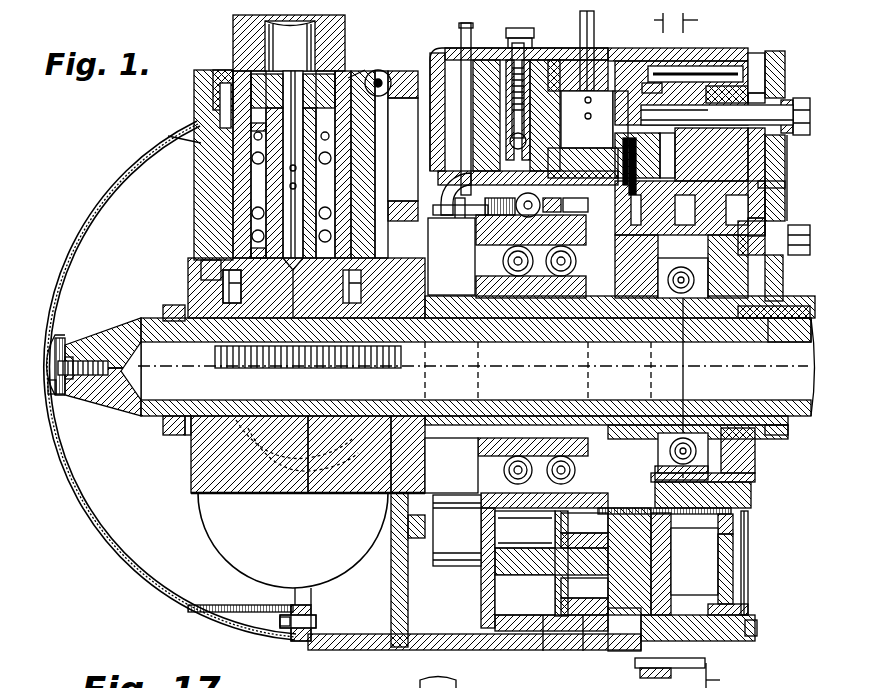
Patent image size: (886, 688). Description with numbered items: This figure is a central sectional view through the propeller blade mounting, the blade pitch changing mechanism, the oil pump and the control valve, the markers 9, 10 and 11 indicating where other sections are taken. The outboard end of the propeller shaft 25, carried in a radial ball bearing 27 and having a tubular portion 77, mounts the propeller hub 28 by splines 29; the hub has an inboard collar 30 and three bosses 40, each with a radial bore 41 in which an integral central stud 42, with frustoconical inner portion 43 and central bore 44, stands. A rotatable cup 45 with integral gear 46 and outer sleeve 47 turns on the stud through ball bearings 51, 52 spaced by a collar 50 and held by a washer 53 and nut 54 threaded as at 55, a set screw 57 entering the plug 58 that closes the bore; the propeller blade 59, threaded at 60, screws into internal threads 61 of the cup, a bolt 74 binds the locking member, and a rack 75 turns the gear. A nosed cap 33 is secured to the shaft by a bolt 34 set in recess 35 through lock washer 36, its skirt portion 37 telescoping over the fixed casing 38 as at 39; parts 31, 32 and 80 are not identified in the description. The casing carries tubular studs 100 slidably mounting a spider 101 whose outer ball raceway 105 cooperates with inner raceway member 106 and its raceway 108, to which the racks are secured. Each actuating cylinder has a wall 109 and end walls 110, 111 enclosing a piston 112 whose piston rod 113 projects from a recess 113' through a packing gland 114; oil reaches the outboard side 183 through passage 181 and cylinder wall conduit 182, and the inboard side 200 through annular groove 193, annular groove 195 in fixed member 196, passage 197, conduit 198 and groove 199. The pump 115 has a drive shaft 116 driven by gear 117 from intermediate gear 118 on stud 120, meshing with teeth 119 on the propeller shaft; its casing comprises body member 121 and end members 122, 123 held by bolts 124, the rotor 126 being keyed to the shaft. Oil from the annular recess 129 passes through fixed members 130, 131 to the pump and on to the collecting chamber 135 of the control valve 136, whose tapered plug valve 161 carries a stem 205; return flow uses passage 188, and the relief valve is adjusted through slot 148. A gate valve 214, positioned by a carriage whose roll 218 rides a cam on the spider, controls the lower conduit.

The section line 9 is at (709, 350).
The section line 10 is at (745, 45).
The section line 11 is at (649, 23).
The propeller shaft 25 is at (535, 334).
The radial ball bearing 27 is at (660, 268).
The propeller hub 28 is at (184, 450).
The splines 29 is at (348, 488).
The collar 30 is at (472, 334).
The collar 31 is at (150, 416).
The collar 32 is at (178, 425).
The nosed cap 33 is at (78, 486).
The bolt 34 is at (72, 385).
The recess 35 is at (46, 340).
The lock washer 36 is at (46, 384).
The skirt portion 37 is at (296, 640).
The fixed casing 38 is at (462, 643).
The telescoping overlap 39 is at (392, 644).
The bosses 40 is at (244, 228).
The bore 41 is at (243, 245).
The central stud 42 is at (262, 210).
The frustoconical inner portion 43 is at (193, 280).
The central bore 44 is at (230, 170).
The rotatable cup 45 is at (215, 268).
The gear 46 is at (228, 376).
The outer sleeve 47 is at (160, 130).
The collar 50 is at (244, 205).
The ball bearings 51 is at (244, 150).
The ball bearings 52 is at (245, 128).
The washer 53 is at (193, 112).
The nut 54 is at (222, 62).
The threaded engagement 55 is at (212, 100).
The set screw 57 is at (291, 177).
The plug 58 is at (288, 68).
The propeller blade 59 is at (337, 28).
The threads 60 is at (391, 164).
The internal threads 61 is at (367, 164).
The bolt 74 is at (373, 65).
The rack 75 is at (308, 369).
The tubular portion 77 is at (476, 367).
The hole 80 is at (265, 165).
The tubular studs 100 is at (478, 245).
The spider 101 is at (487, 590).
The outer ball raceway 105 is at (520, 560).
The inner ball raceway member 106 is at (496, 465).
The ball raceway 108 is at (470, 470).
The cylinder wall 109 is at (654, 668).
The end wall 110 is at (740, 589).
The end wall 111 is at (545, 522).
The piston 112 is at (680, 629).
The piston rod 113 is at (566, 648).
The recess 113' is at (526, 623).
The packing gland 114 is at (535, 643).
The pump 115 is at (765, 46).
The drive shaft 116 is at (790, 90).
The gear 117 is at (779, 155).
The intermediate gear 118 is at (760, 200).
The teeth 119 is at (775, 296).
The stud 120 is at (774, 238).
The cylindrical body member 121 is at (720, 78).
The end member 122 is at (746, 42).
The end member 123 is at (620, 60).
The bolts 124 is at (660, 78).
The rotor 126 is at (717, 115).
The annular recess 129 is at (770, 325).
The fixed member 130 is at (650, 252).
The fixed member 131 is at (725, 180).
The collecting chamber 135 is at (648, 72).
The control valve 136 is at (545, 101).
The slot 148 is at (310, 660).
The tapered plug type valve 161 is at (529, 106).
The passage 181 is at (692, 564).
The cylinder wall conduit 182 is at (698, 449).
The outboard side 183 is at (616, 500).
The passage 188 is at (712, 334).
The annular groove segment 193 is at (777, 178).
The annular groove 195 is at (748, 478).
The fixed member 196 is at (748, 460).
The passage 197 is at (745, 494).
The communicating conduit 198 is at (722, 510).
The groove 199 is at (723, 522).
The inboard side 200 is at (740, 567).
The stem 205 is at (572, 10).
The gate valve 214 is at (580, 200).
The roll 218 is at (506, 267).